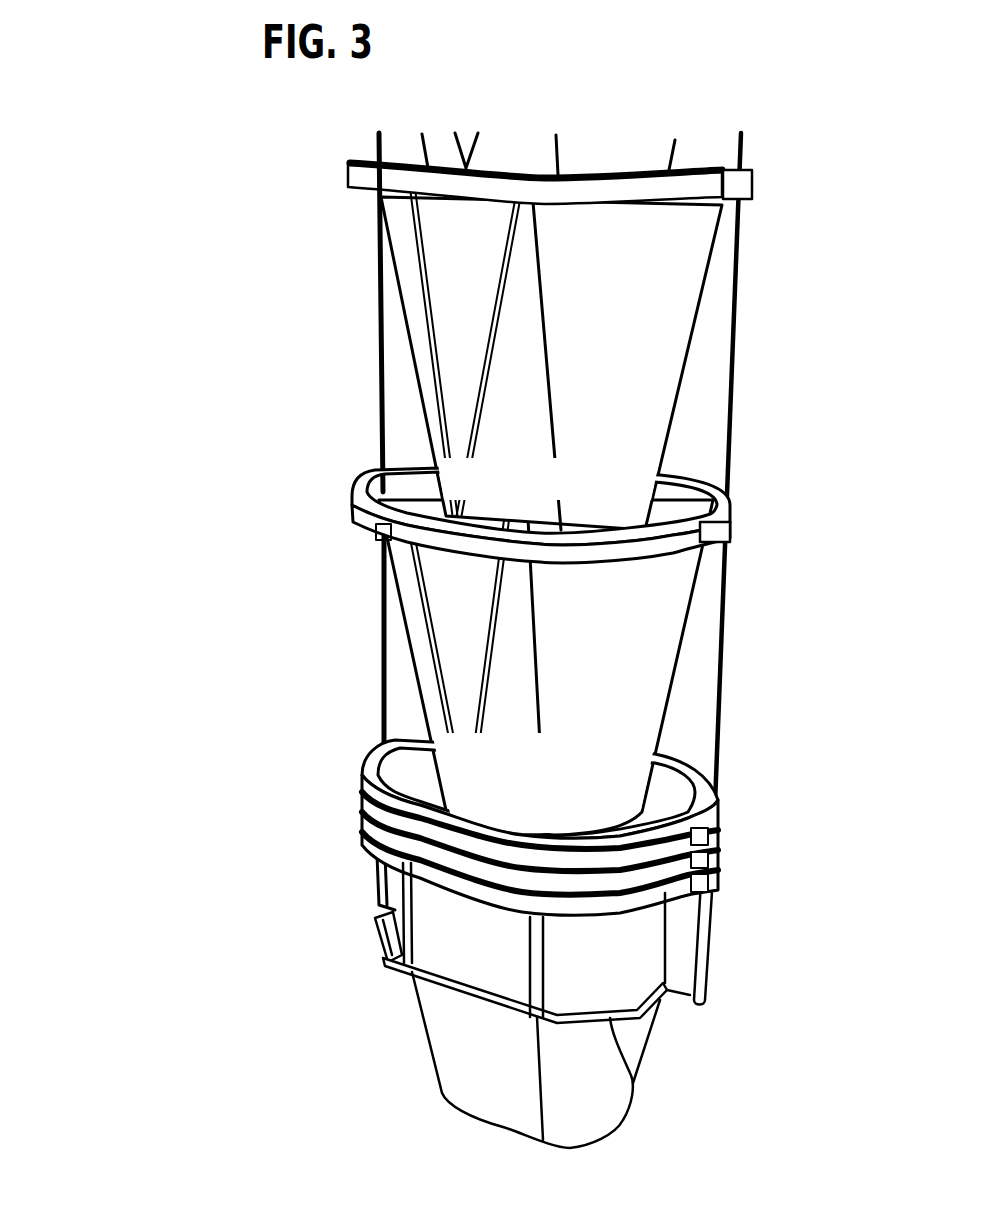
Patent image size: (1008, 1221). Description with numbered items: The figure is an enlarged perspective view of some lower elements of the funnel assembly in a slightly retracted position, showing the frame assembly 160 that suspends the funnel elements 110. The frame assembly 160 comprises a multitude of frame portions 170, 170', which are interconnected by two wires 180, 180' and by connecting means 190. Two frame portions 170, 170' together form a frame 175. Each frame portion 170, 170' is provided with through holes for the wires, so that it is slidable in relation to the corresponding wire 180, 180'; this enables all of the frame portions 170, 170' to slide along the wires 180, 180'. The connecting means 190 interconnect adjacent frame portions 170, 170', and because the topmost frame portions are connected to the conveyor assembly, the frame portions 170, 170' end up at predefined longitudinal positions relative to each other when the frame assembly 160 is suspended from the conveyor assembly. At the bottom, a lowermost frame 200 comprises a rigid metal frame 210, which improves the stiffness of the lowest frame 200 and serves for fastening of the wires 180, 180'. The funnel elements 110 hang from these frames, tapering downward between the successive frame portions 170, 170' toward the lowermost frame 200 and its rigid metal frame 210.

The funnel elements 110 is at (652, 285).
The frame assembly 160 is at (264, 721).
The frame portion 170 is at (446, 510).
The frame portion 170' is at (778, 471).
The frame 175 is at (374, 532).
The wire 180 is at (482, 521).
The wire 180' is at (793, 569).
The connecting means 190 is at (484, 340).
The lowermost frame 200 is at (383, 860).
The rigid metal frame 210 is at (633, 1087).